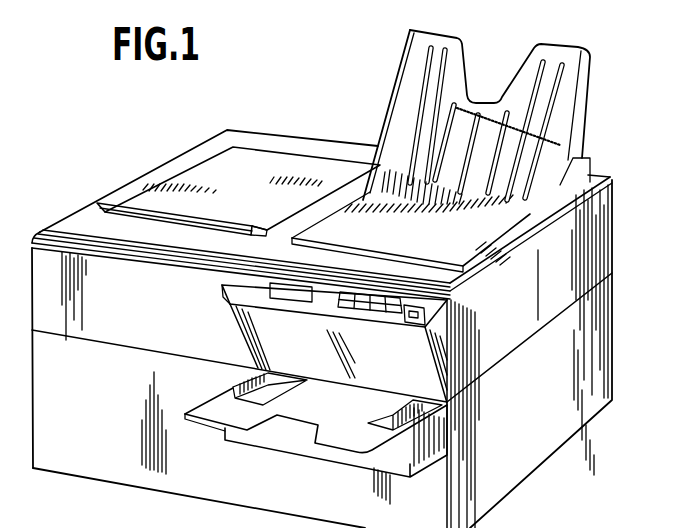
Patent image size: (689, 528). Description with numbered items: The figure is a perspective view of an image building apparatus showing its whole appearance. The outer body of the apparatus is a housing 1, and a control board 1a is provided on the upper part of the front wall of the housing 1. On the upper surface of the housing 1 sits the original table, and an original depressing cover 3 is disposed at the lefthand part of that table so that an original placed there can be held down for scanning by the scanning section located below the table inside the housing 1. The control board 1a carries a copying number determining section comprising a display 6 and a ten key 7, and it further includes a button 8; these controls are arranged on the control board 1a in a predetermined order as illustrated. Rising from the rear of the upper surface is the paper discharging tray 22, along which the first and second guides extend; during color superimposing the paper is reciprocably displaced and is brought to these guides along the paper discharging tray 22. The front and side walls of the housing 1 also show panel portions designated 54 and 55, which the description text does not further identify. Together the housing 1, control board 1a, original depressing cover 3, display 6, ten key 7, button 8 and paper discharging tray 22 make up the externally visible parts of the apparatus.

The housing 1 is at (341, 329).
The control board 1a is at (316, 342).
The original depressing cover 3 is at (177, 181).
The display 6 is at (292, 301).
The ten key 7 is at (367, 306).
The button 8 is at (412, 323).
The paper discharging tray 22 is at (445, 43).
The door 54 is at (538, 320).
The front cover panel 55 is at (493, 358).